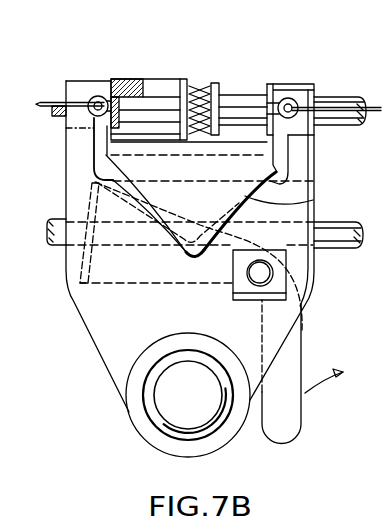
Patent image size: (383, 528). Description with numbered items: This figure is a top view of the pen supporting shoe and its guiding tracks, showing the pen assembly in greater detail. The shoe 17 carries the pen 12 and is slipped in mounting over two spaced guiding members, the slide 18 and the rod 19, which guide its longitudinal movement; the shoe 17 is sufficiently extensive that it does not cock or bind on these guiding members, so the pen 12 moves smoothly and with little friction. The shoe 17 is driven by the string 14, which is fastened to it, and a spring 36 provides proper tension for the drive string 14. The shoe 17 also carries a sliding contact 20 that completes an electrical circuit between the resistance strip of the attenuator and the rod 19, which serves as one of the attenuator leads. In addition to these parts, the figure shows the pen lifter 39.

The pen 12 is at (205, 428).
The string 14 is at (46, 100).
The shoe 17 is at (138, 434).
The slide 18 is at (341, 126).
The rod 19 is at (345, 249).
The sliding contact 20 is at (314, 200).
The spring 36 is at (196, 88).
The pen lifter 39 is at (297, 440).